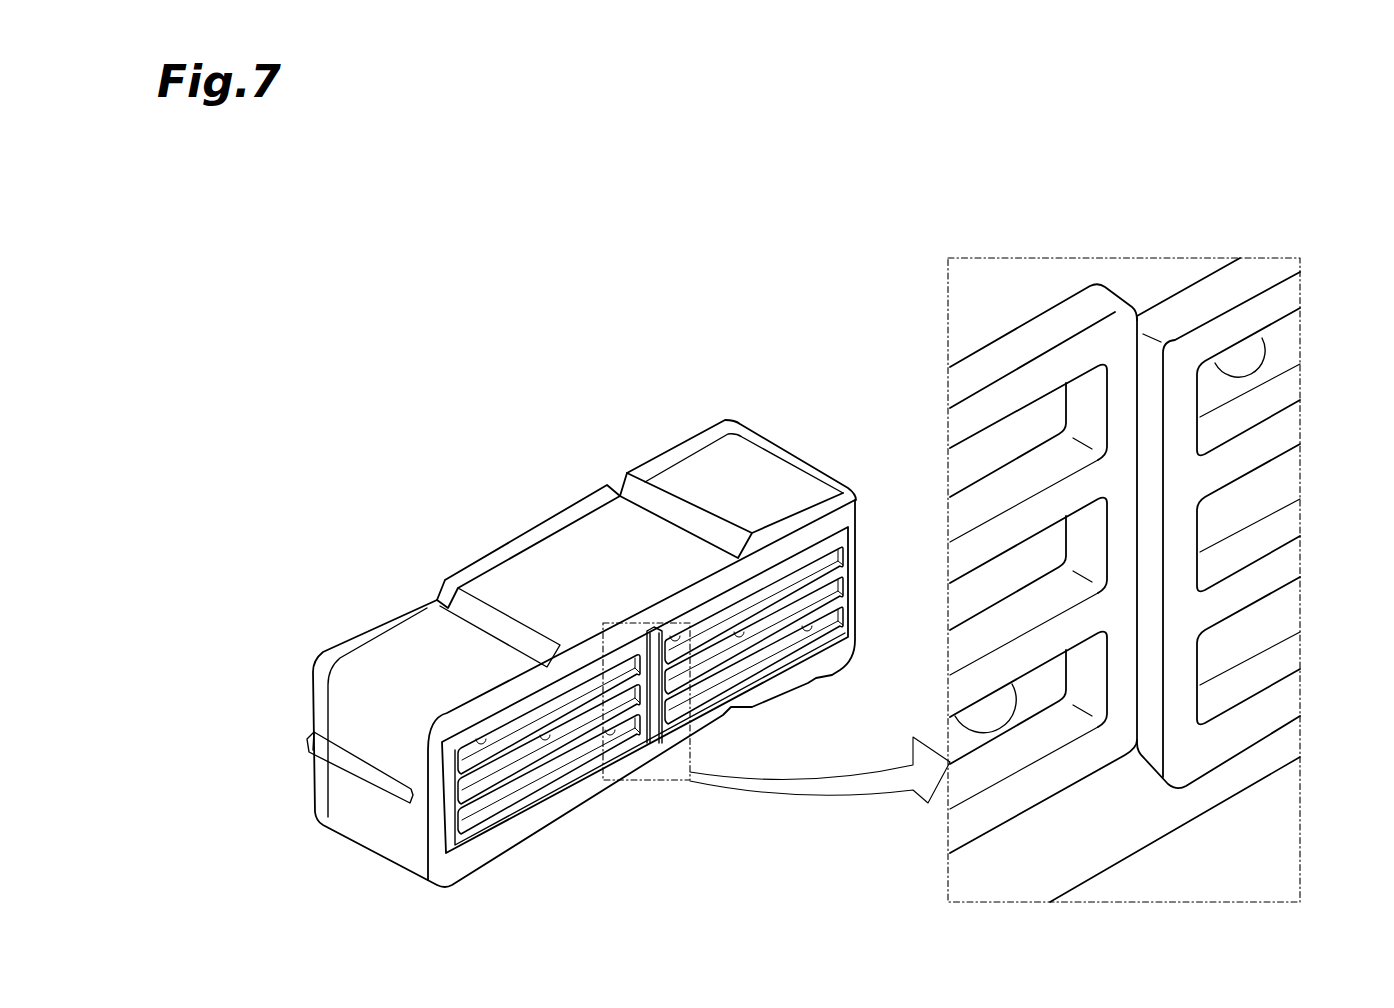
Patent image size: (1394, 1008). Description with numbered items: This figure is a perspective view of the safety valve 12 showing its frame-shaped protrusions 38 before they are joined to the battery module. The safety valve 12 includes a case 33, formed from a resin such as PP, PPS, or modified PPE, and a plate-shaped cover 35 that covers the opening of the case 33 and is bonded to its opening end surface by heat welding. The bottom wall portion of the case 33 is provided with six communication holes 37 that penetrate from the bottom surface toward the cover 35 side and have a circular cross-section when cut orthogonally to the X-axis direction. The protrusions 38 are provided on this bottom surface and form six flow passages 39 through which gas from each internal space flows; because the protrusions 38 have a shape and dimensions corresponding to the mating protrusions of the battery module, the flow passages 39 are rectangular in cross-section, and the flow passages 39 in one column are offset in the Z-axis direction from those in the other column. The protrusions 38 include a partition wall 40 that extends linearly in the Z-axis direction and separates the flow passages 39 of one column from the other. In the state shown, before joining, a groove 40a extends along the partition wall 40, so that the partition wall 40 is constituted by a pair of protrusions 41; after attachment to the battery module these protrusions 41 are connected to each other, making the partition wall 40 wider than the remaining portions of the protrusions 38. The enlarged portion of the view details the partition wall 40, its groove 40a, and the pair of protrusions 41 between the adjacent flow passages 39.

The safety valve 12 is at (449, 501).
The case 33 is at (765, 470).
The cover 35 is at (555, 522).
The communication holes 37 is at (613, 738).
The protrusions 38 is at (491, 706).
The flow passages 39 is at (566, 762).
The partition wall 40 is at (652, 628).
The groove 40a is at (1147, 712).
The protrusions 41 is at (1117, 385).